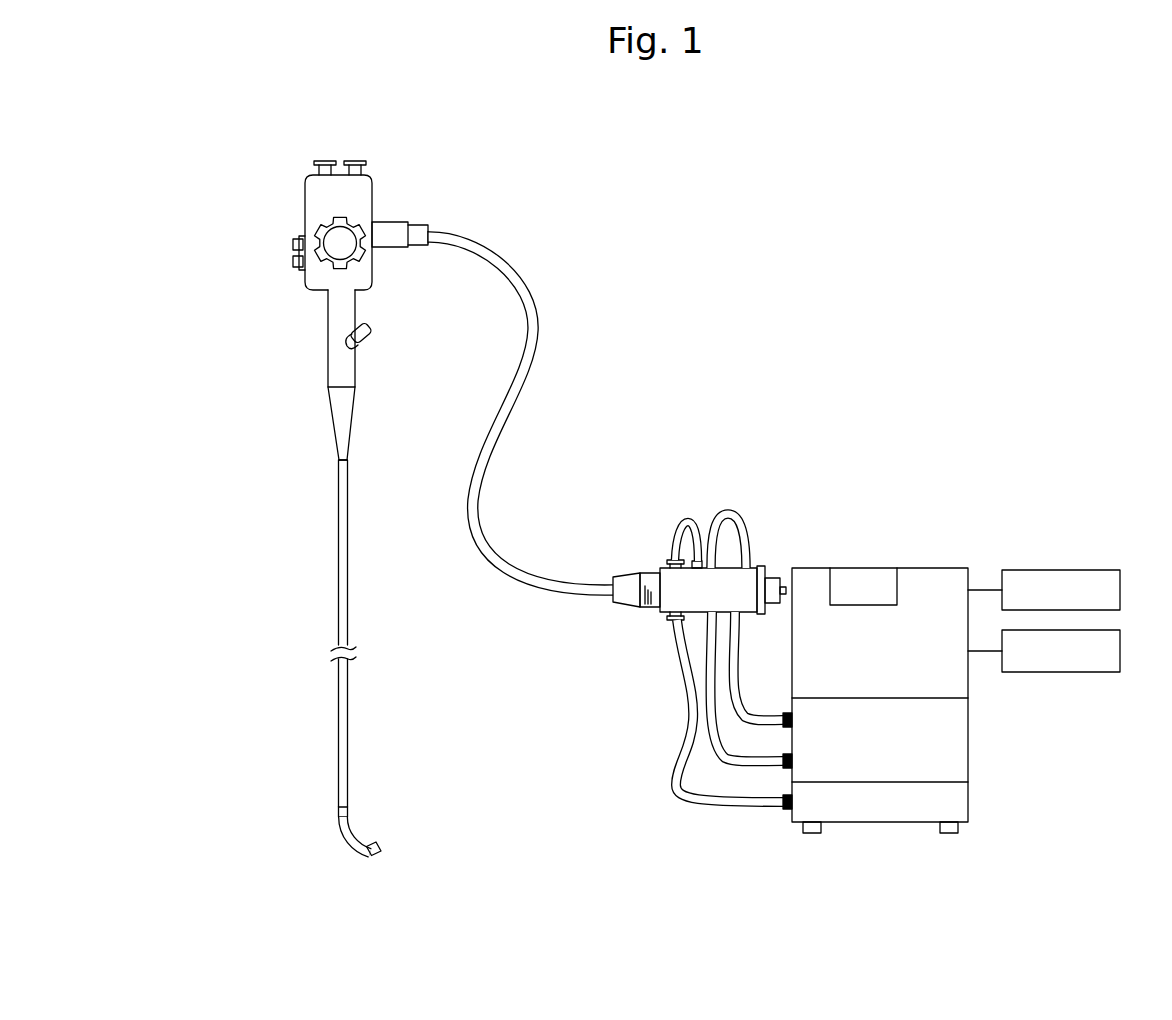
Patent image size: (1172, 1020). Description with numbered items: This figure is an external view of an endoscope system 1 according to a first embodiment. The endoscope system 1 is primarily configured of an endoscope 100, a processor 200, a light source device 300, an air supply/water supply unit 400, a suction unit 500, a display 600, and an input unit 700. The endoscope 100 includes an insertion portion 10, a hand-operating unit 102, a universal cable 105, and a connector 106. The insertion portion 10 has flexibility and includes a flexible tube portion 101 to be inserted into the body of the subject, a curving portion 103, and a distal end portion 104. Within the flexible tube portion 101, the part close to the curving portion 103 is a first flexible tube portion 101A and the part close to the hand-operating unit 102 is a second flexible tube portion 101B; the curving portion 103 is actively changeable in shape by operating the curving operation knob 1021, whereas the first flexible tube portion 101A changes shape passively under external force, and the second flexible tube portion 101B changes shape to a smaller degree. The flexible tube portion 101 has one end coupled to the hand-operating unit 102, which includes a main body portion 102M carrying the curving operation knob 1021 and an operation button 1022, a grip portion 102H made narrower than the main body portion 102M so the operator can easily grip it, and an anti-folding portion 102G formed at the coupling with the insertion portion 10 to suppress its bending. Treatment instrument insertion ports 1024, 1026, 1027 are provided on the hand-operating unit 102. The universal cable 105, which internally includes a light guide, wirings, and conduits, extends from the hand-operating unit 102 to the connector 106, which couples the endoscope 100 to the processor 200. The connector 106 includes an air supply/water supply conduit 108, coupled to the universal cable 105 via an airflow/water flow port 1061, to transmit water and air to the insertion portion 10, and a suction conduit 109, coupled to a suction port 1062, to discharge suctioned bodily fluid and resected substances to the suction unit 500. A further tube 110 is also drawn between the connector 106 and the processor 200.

The endoscope system 1 is at (858, 203).
The insertion portion 10 is at (186, 528).
The endoscope 100 is at (580, 286).
The flexible tube portion 101 is at (248, 520).
The first flexible tube portion 101A is at (338, 734).
The second flexible tube portion 101B is at (338, 542).
The hand-operating unit 102 is at (203, 158).
The main body portion 102M is at (305, 183).
The grip portion 102H is at (328, 316).
The anti-folding portion 102G is at (330, 404).
The curving operation knob 1021 is at (343, 217).
The operation button 1022 is at (280, 237).
The treatment instrument insertion port 1024 is at (370, 334).
The treatment instrument insertion port 1026 is at (323, 160).
The treatment instrument insertion port 1027 is at (355, 160).
The curving portion 103 is at (340, 834).
The distal end portion 104 is at (368, 858).
The universal cable 105 is at (510, 255).
The connector 106 is at (760, 568).
The airflow/water flow port 1061 is at (668, 561).
The suction port 1062 is at (668, 621).
The air supply/water supply conduit 108 is at (682, 524).
The suction conduit 109 is at (690, 808).
The tube 110 is at (728, 510).
The processor 200 is at (938, 572).
The light source device 300 is at (858, 576).
The air supply/water supply unit 400 is at (968, 744).
The suction unit 500 is at (968, 805).
The display 600 is at (1110, 570).
The input unit 700 is at (1110, 630).